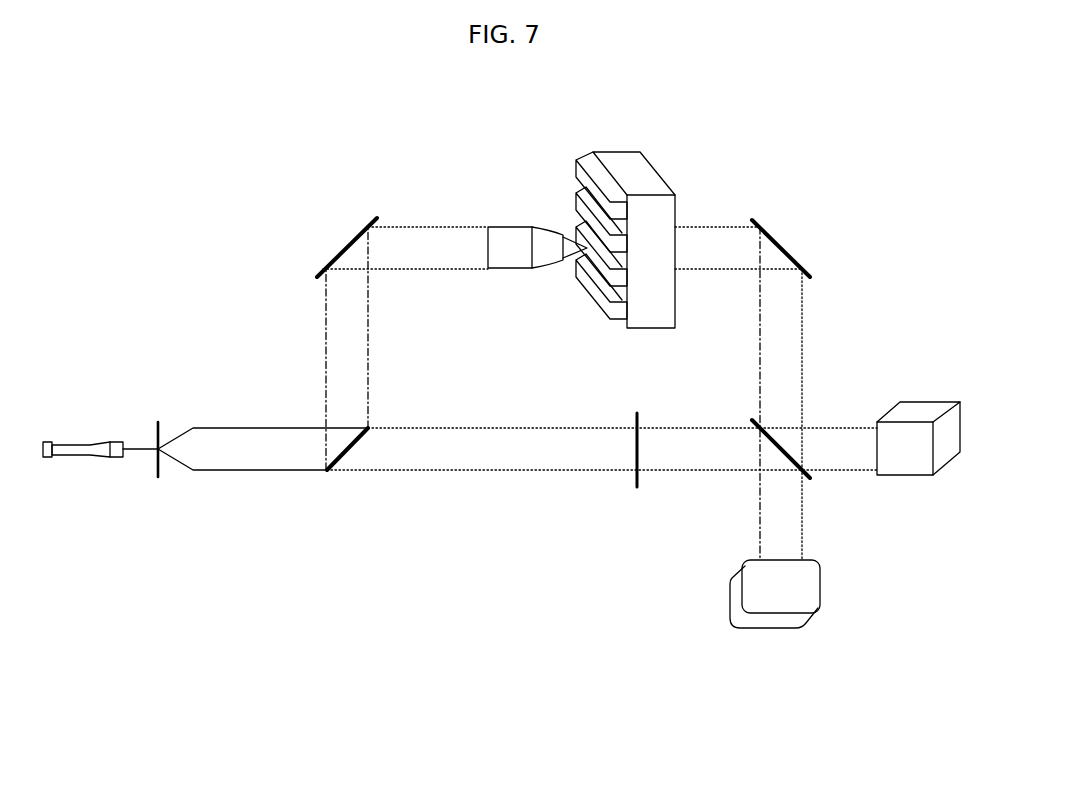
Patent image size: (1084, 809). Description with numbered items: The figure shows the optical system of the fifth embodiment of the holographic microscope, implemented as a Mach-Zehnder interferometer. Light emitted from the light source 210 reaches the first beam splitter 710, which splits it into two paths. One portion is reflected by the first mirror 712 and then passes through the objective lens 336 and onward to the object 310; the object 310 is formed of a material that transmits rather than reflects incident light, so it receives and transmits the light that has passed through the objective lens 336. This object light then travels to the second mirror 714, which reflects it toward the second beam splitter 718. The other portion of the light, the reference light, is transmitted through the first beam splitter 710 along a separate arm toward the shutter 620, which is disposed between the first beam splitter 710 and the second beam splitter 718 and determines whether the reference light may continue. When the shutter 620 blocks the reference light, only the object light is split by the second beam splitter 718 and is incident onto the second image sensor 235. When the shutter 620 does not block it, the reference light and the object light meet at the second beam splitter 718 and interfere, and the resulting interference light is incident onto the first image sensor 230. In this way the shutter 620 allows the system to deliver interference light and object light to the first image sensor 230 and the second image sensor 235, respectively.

The light source 210 is at (70, 440).
The first beam splitter 710 is at (352, 452).
The first mirror 712 is at (342, 240).
The objective lens 336 is at (508, 227).
The object 310 is at (637, 168).
The second mirror 714 is at (783, 245).
The shutter 620 is at (634, 452).
The second beam splitter 718 is at (778, 448).
The first image sensor 230 is at (905, 478).
The second image sensor 235 is at (776, 630).